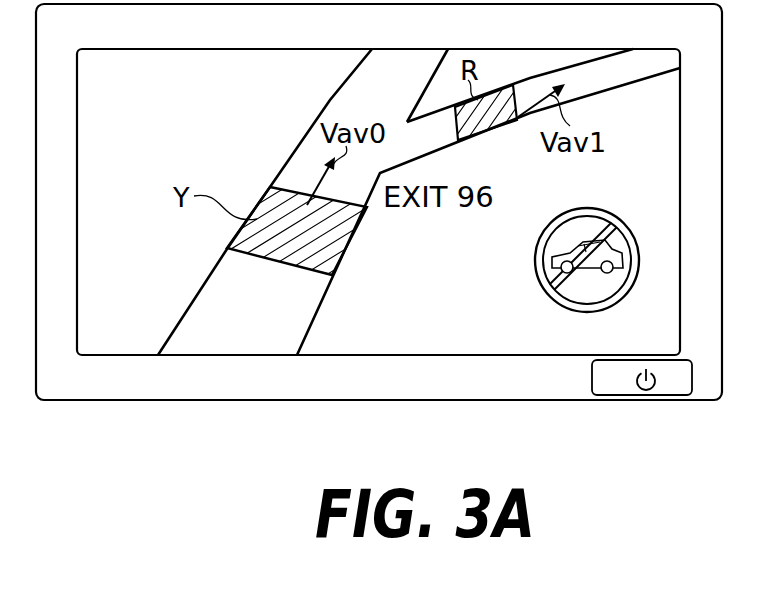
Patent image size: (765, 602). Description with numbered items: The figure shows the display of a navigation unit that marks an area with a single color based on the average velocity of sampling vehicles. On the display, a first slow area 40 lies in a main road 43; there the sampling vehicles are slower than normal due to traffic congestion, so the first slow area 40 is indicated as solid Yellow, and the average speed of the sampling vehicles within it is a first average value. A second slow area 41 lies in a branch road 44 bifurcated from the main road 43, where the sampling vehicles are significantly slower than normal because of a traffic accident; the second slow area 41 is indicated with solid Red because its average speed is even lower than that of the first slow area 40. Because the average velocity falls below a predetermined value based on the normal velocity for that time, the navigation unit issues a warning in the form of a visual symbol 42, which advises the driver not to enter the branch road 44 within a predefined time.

The first slow area 40 is at (347, 245).
The second slow area 41 is at (487, 133).
The visual symbol 42 is at (537, 283).
The main road 43 is at (197, 287).
The branch road 44 is at (643, 81).